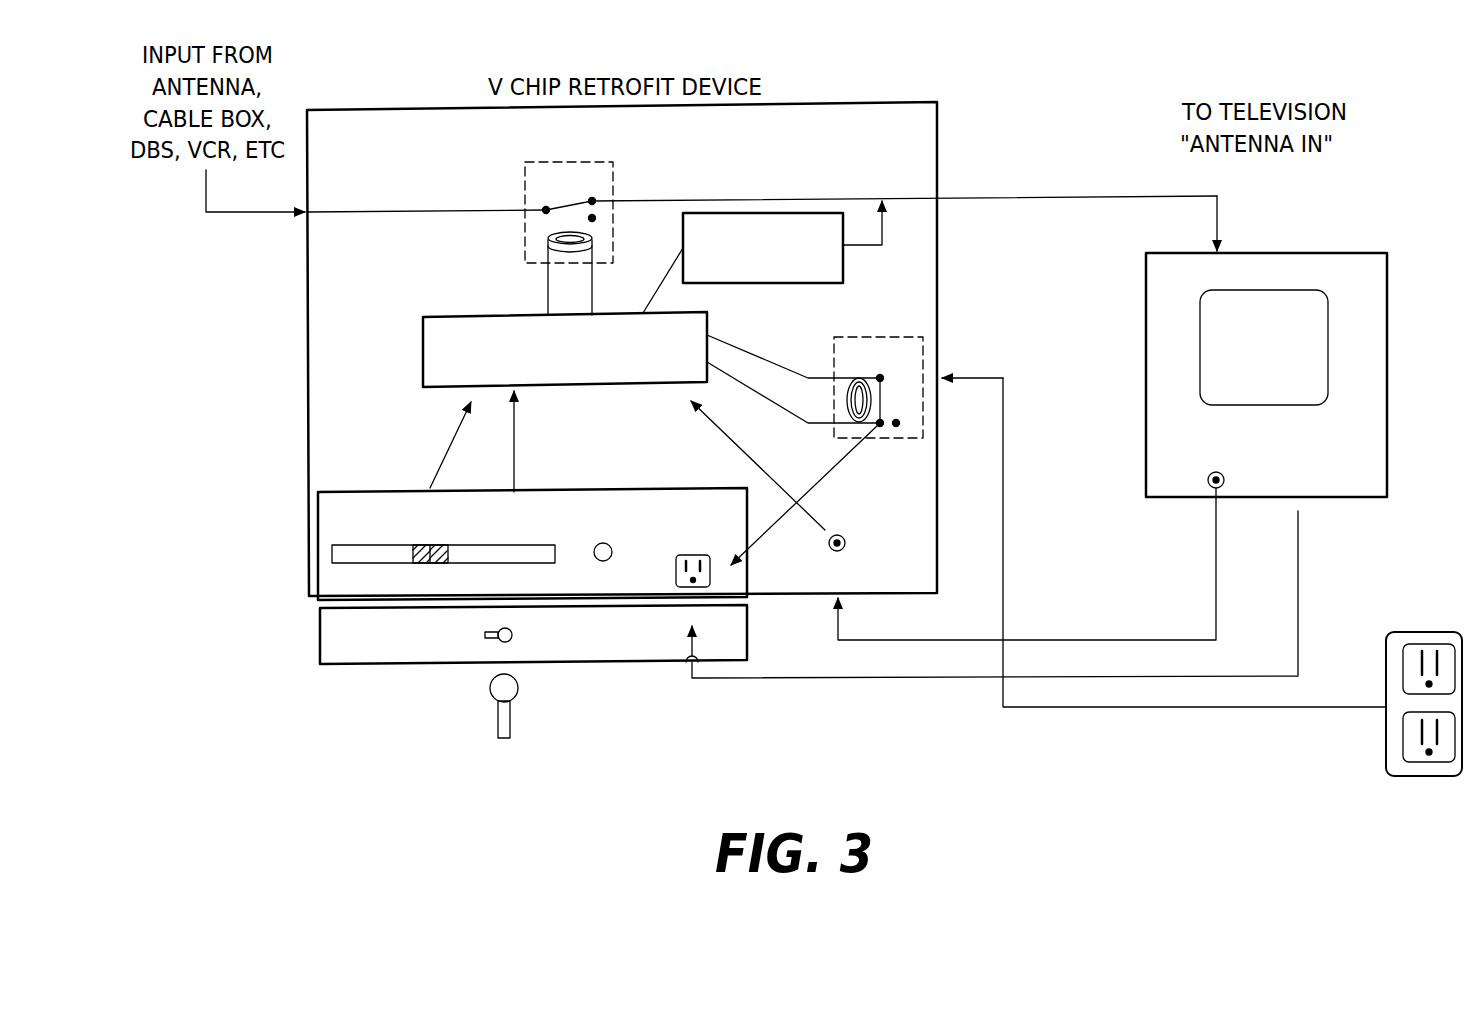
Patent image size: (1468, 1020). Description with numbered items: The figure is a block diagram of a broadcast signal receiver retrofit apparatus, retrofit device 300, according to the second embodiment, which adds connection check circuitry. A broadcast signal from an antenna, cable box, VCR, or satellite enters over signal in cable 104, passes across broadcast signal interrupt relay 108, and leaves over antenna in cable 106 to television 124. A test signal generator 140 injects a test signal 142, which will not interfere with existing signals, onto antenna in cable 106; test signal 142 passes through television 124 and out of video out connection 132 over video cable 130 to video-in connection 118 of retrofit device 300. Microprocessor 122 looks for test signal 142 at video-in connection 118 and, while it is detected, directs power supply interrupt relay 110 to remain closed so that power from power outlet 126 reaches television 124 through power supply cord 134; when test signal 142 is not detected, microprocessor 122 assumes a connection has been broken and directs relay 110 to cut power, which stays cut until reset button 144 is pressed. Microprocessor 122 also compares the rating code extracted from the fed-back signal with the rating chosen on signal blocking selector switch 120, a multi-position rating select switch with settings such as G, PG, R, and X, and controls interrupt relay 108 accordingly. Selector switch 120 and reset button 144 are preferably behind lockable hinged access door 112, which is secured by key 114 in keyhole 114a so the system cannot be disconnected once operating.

The retrofit device 300 is at (868, 60).
The signal in cable 104 is at (256, 214).
The antenna in cable 106 is at (1218, 210).
The broadcast signal interrupt relay 108 is at (613, 171).
The power supply interrupt relay 110 is at (923, 348).
The lockable hinged access door 112 is at (747, 630).
The key 114 is at (497, 726).
The keyhole 114a is at (470, 635).
The video-in connection 118 is at (847, 542).
The signal blocking selector switch 120 is at (318, 528).
The microprocessor 122 is at (462, 314).
The television 124 is at (1387, 370).
The power outlet 126 is at (1416, 778).
The video cable 130 is at (1095, 640).
The video out connection 132 is at (1221, 490).
The power supply cord 134 is at (782, 680).
The test signal generator 140 is at (790, 213).
The test signal 142 is at (886, 246).
The reset button 144 is at (611, 547).